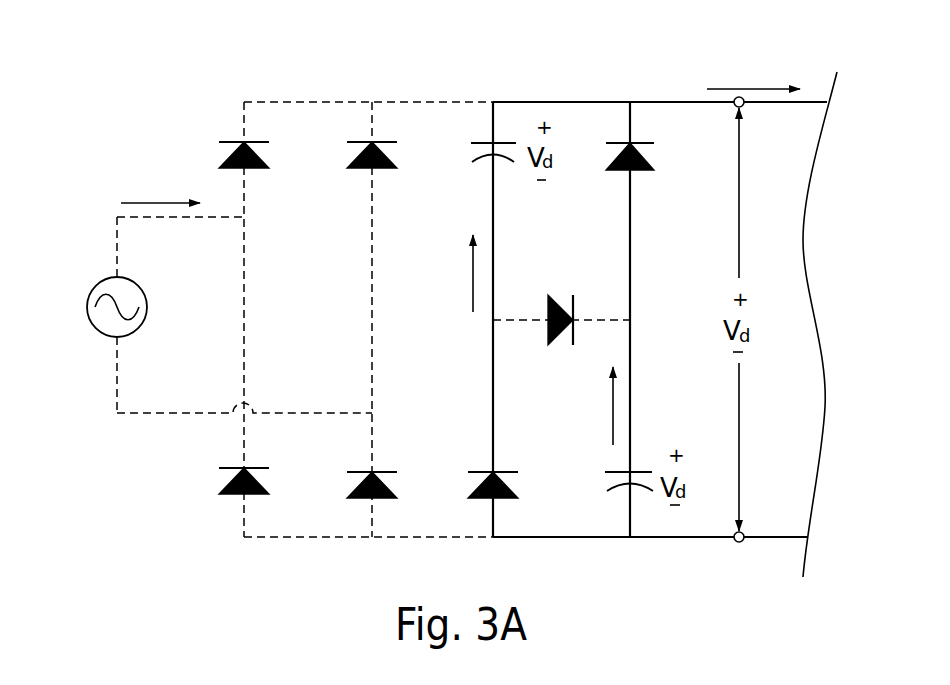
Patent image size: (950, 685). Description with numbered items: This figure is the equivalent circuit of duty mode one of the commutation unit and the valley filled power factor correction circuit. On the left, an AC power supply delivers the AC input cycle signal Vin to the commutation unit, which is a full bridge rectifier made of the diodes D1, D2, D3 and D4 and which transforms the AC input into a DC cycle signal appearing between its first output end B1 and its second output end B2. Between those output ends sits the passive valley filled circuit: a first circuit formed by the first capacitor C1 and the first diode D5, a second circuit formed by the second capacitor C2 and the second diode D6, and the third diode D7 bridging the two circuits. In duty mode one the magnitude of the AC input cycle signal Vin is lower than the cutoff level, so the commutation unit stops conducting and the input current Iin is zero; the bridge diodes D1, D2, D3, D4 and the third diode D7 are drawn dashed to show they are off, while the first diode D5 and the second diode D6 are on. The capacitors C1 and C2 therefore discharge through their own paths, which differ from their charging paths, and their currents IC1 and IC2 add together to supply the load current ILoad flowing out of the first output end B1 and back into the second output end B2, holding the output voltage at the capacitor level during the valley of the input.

The diode D1 is at (227, 150).
The diode D2 is at (227, 477).
The diode D3 is at (357, 150).
The diode D4 is at (356, 480).
The first diode D5 is at (475, 479).
The second diode D6 is at (615, 152).
The third diode D7 is at (561, 300).
The first capacitor C1 is at (475, 149).
The second capacitor C2 is at (613, 478).
The first output end B1 is at (744, 107).
The second output end B2 is at (744, 532).
The AC input cycle signal Vin is at (92, 307).
The input current Iin is at (160, 186).
The first capacitor current IC1 is at (450, 273).
The second capacitor current IC2 is at (591, 406).
The load current ILoad is at (750, 67).